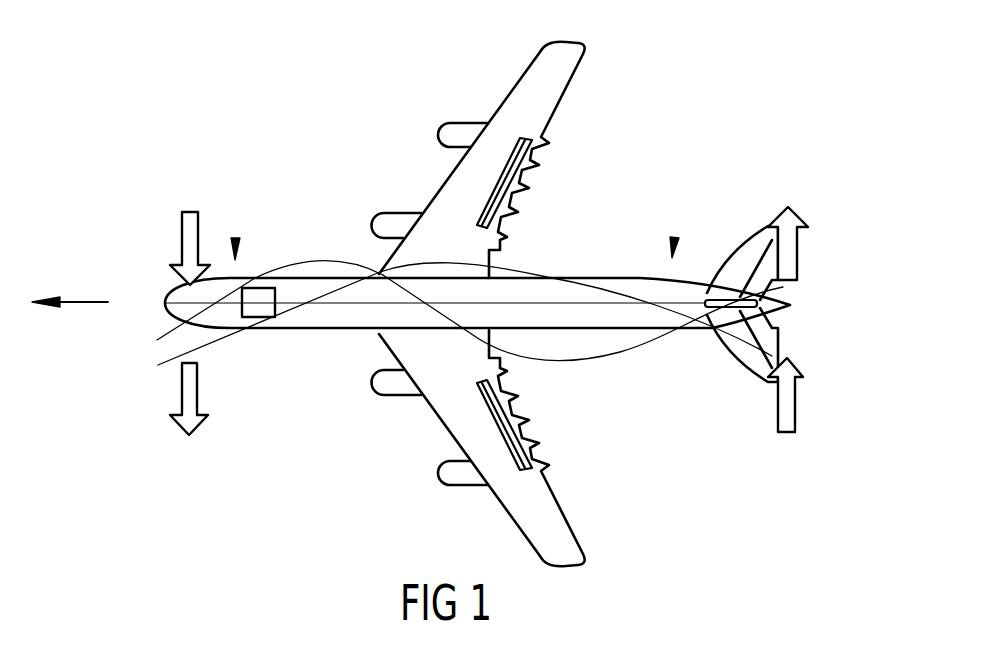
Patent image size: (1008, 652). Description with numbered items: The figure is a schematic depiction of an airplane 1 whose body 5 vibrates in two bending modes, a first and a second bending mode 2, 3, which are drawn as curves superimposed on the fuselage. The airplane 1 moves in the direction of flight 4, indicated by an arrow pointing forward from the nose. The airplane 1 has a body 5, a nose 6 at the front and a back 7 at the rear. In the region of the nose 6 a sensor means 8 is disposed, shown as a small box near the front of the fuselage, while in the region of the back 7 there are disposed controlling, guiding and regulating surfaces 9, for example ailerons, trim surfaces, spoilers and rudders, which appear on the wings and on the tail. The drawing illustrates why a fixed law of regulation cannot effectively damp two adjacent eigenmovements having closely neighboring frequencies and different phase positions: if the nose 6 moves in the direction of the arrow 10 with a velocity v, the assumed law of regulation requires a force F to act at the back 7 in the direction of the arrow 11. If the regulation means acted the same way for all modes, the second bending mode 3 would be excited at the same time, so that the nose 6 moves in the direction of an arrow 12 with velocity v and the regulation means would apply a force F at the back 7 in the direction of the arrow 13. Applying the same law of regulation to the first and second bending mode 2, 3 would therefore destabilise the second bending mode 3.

The airplane 1 is at (760, 103).
The first bending mode 2 is at (553, 277).
The second bending mode 3 is at (627, 353).
The direction of flight 4 is at (73, 302).
The body 5 is at (297, 277).
The nose 6 is at (236, 240).
The back 7 is at (676, 238).
The sensor means 8 is at (267, 317).
The controlling, guiding and regulating surfaces 9 is at (520, 168).
The arrow 10 is at (180, 396).
The arrow 11 is at (798, 407).
The arrow 12 is at (187, 211).
The arrow 13 is at (798, 250).